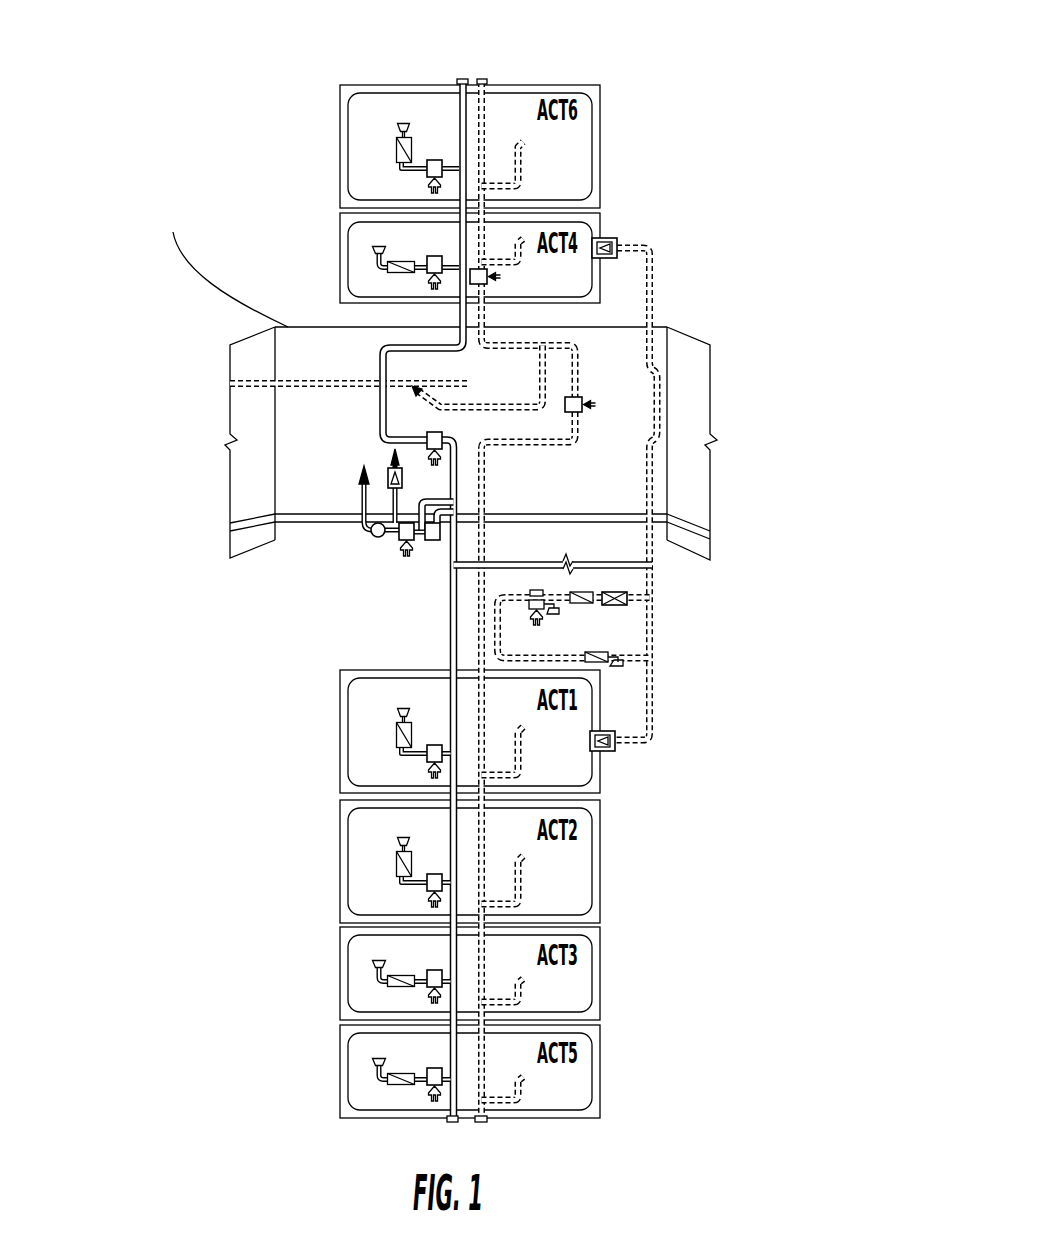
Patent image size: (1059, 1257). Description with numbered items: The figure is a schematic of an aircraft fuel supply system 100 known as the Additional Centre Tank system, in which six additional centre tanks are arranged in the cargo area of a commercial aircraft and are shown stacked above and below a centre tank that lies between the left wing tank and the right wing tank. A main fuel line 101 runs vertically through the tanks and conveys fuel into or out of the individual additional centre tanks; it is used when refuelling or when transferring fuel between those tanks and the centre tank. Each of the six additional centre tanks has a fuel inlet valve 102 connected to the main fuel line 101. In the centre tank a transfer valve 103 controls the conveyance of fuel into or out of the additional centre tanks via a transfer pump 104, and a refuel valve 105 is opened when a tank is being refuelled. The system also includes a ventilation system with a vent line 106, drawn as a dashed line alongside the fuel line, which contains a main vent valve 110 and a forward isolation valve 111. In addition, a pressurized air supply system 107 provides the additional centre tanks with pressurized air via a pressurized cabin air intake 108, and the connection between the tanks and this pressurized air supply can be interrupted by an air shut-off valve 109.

The aircraft fuel supply system 100 is at (660, 67).
The main fuel line 101 is at (303, 518).
The fuel inlet valves 102 is at (430, 257).
The transfer valve 103 is at (401, 541).
The transfer pump 104 is at (372, 536).
The refuel valve 105 is at (433, 541).
The vent line 106 is at (293, 382).
The pressurized air supply system 107 is at (648, 740).
The pressurized cabin air intake 108 is at (627, 598).
The air shut-off valve 109 is at (545, 618).
The main vent valve 110 is at (598, 404).
The forward isolation valve 111 is at (502, 277).